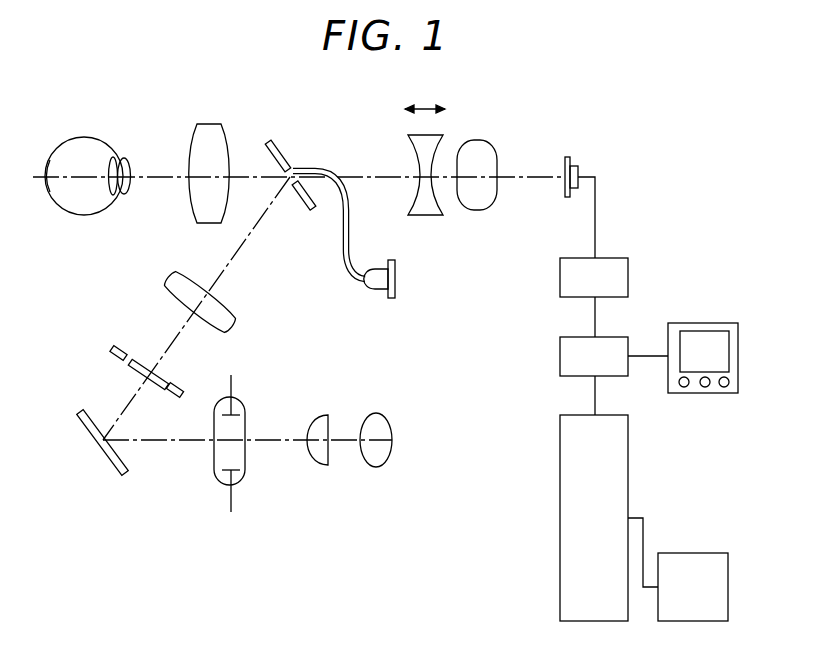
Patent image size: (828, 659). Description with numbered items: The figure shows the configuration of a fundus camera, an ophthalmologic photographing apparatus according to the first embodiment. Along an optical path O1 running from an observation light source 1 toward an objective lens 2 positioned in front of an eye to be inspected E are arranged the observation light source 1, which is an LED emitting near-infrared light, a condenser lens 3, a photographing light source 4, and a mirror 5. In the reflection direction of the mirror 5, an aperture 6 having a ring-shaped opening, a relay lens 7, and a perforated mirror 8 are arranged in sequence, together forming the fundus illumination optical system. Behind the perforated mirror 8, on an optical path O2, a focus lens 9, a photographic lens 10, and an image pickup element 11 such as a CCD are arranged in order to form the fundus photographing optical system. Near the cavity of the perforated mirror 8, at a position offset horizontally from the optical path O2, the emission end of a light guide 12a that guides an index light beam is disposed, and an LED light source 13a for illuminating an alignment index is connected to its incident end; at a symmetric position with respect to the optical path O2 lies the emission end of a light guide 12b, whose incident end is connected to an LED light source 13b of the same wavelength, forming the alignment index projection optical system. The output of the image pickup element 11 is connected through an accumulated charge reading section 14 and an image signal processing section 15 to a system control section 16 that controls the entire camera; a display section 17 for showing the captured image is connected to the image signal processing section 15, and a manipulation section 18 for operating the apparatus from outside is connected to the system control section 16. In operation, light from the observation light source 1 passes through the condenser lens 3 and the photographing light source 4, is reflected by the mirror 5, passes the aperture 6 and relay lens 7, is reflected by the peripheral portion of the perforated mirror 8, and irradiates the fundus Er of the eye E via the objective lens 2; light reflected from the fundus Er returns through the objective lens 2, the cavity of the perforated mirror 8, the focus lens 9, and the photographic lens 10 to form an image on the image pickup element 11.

The eye to be inspected E is at (90, 137).
The fundus Er is at (56, 180).
The observation light source 1 is at (376, 467).
The objective lens 2 is at (208, 124).
The condenser lens 3 is at (322, 466).
The photographing light source 4 is at (236, 485).
The mirror 5 is at (104, 456).
The aperture 6 is at (120, 348).
The relay lens 7 is at (172, 283).
The perforated mirror 8 is at (272, 142).
The focus lens 9 is at (417, 135).
The photographic lens 10 is at (477, 140).
The image pickup element 11 is at (567, 157).
The light guide 12a is at (340, 230).
The light guide 12b is at (320, 232).
The LED light source 13a is at (373, 290).
The LED light source 13b is at (377, 313).
The accumulated charge reading section 14 is at (560, 280).
The image signal processing section 15 is at (560, 358).
The system control section 16 is at (560, 512).
The display section 17 is at (705, 323).
The manipulation section 18 is at (693, 553).
The optical path O1 is at (157, 442).
The optical path O2 is at (357, 177).